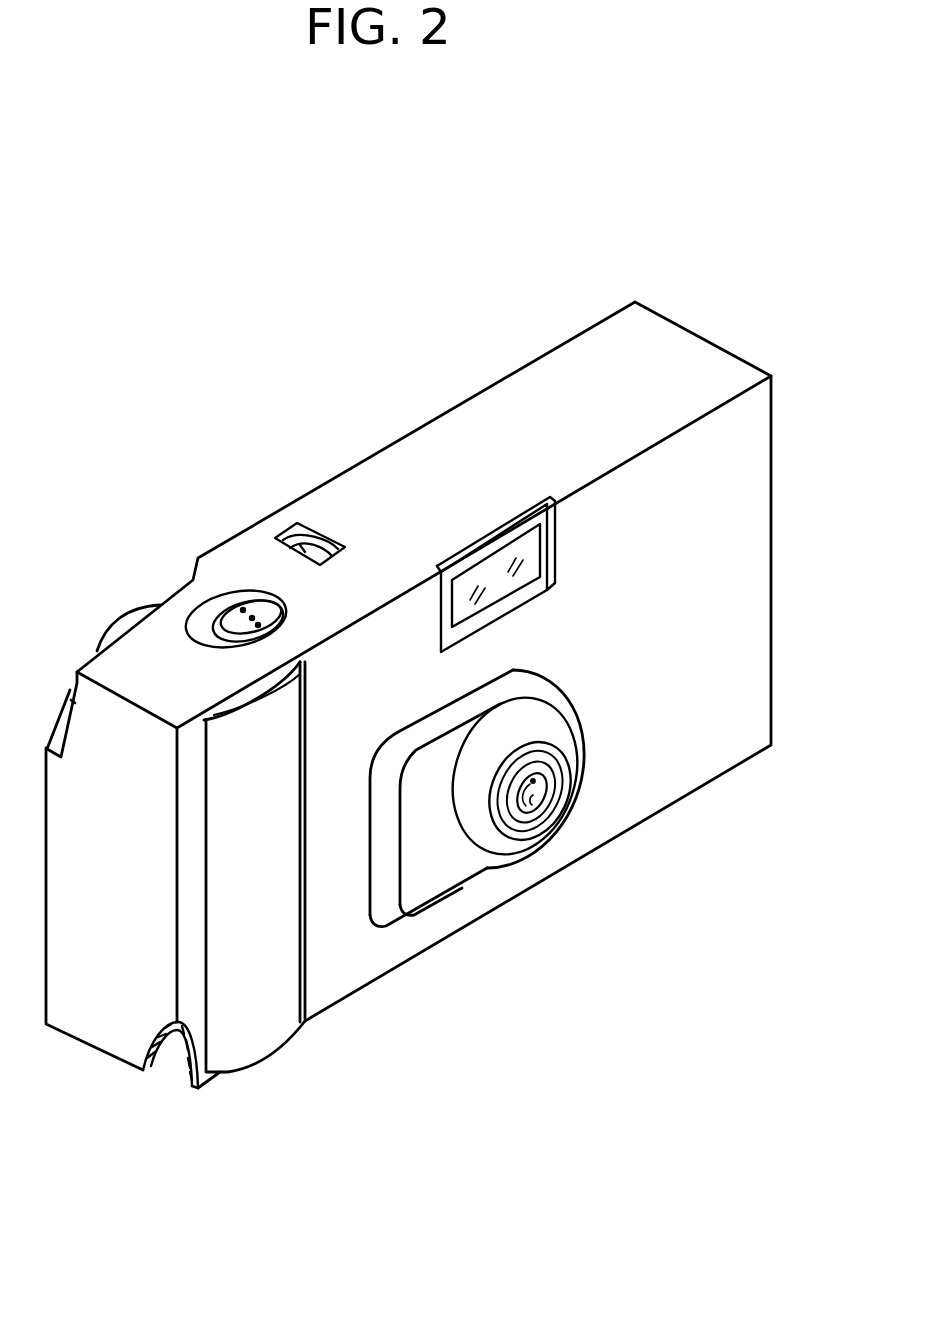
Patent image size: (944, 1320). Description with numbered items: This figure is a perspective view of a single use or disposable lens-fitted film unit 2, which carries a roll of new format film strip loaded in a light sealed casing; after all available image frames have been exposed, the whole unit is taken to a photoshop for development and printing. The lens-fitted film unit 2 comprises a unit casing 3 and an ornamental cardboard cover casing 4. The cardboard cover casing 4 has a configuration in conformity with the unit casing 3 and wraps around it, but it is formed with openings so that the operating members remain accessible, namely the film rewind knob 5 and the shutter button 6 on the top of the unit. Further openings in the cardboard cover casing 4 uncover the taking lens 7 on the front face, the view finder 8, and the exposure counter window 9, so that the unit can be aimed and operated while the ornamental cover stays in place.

The lens-fitted film unit 2 is at (437, 397).
The unit casing 3 is at (167, 1064).
The cardboard cover casing 4 is at (115, 1017).
The film rewind knob 5 is at (127, 612).
The shutter button 6 is at (260, 607).
The taking lens 7 is at (540, 800).
The view finder 8 is at (520, 560).
The exposure counter window 9 is at (340, 542).